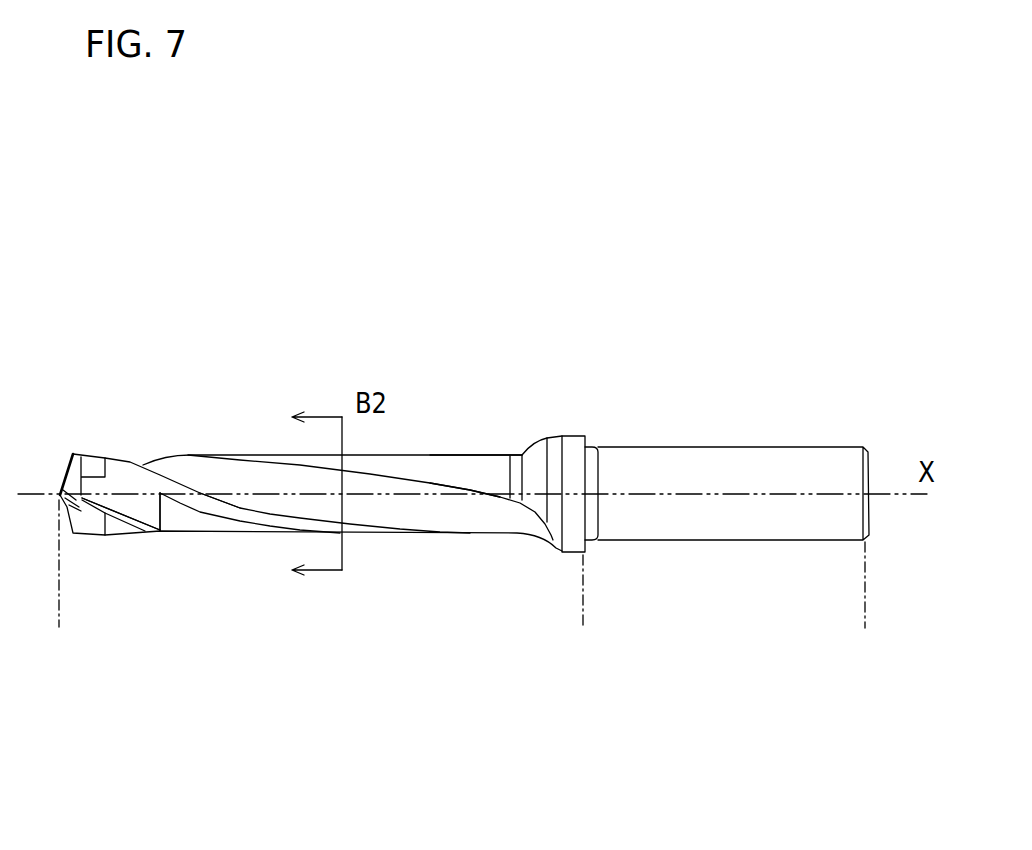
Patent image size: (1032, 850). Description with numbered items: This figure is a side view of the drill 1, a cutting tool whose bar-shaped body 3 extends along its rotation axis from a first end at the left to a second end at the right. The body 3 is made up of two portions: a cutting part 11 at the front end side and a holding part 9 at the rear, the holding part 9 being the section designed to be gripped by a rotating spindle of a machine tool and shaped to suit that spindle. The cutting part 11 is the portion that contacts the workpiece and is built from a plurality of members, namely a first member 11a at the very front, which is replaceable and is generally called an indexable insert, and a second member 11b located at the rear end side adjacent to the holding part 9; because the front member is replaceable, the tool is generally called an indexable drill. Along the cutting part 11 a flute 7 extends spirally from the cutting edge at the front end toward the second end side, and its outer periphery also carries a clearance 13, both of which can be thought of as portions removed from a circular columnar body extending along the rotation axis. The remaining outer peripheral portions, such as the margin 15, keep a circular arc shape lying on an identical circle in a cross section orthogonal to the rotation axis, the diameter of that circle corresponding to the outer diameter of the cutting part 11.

The drill 1 is at (178, 378).
The body 3 is at (853, 587).
The flute 7 is at (90, 518).
The holding part 9 is at (733, 493).
The cutting part 11 is at (305, 509).
The first member 11a is at (66, 483).
The second member 11b is at (452, 455).
The clearance 13 is at (178, 518).
The margin 15 is at (228, 500).